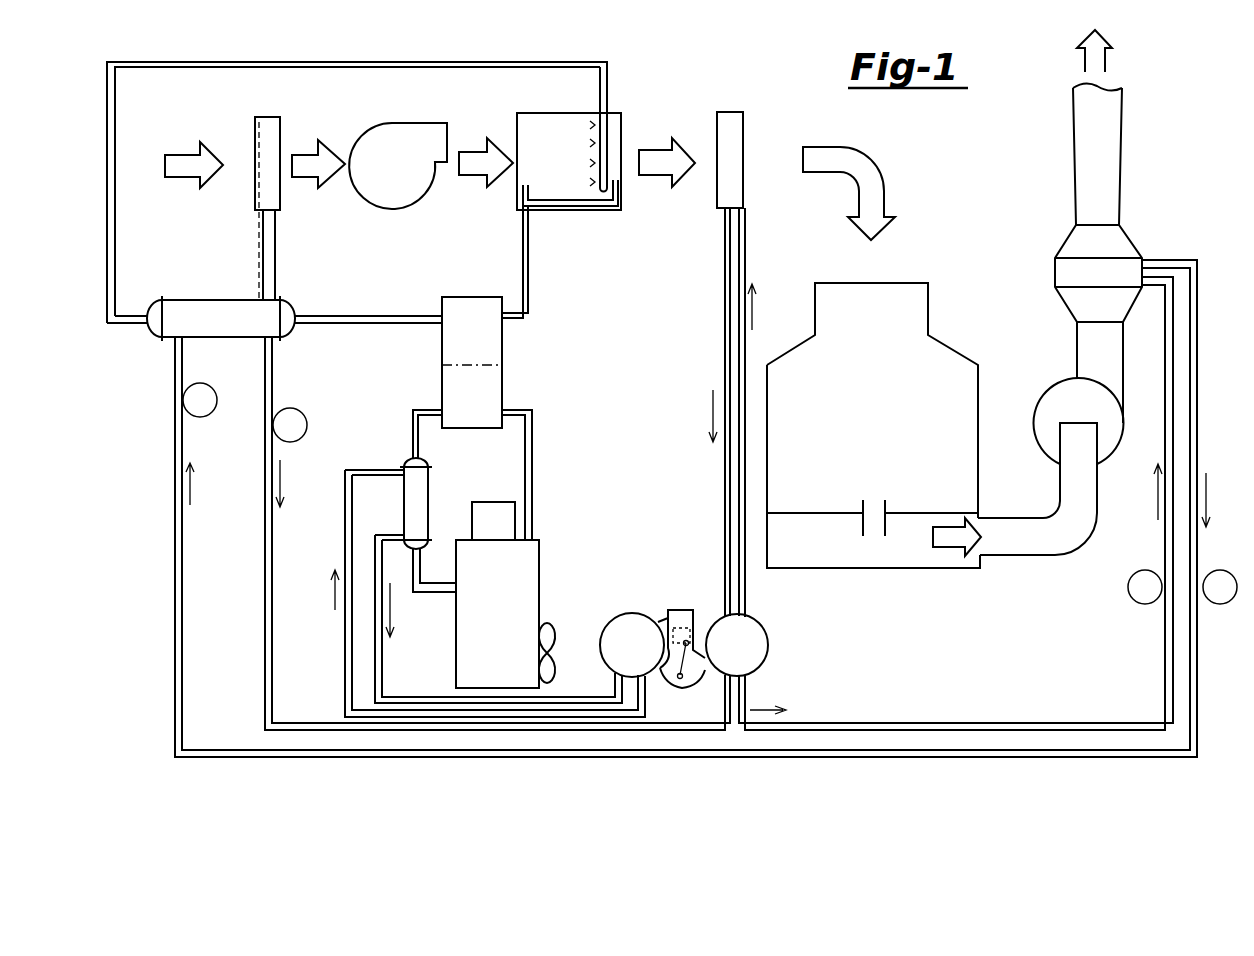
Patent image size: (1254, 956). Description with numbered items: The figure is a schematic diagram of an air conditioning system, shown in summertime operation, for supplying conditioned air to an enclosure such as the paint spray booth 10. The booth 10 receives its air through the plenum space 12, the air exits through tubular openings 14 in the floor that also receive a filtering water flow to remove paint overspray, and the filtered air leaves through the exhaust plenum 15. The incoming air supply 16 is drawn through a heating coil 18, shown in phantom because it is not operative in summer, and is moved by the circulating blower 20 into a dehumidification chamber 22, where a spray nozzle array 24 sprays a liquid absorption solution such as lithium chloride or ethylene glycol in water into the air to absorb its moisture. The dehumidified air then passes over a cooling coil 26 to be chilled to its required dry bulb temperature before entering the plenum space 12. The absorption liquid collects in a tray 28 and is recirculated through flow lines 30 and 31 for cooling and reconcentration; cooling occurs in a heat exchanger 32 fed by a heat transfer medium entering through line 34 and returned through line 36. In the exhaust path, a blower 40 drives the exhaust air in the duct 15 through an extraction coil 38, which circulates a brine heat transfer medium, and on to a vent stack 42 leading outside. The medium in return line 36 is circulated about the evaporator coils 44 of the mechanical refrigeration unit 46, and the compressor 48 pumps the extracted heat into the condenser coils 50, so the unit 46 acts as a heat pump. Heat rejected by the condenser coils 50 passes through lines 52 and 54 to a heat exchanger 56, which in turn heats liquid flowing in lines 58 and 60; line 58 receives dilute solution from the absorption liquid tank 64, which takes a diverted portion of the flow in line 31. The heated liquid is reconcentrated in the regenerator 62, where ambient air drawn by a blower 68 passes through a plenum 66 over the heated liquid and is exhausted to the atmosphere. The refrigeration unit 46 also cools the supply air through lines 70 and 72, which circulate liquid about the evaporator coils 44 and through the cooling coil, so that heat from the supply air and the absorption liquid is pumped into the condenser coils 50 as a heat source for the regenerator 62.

The paint spray booth 10 is at (952, 345).
The plenum space 12 is at (910, 292).
The tubular openings 14 is at (888, 505).
The exhaust plenum 15 is at (1015, 557).
The incoming air supply 16 is at (200, 120).
The heating coil 18 is at (267, 118).
The circulating blower 20 is at (420, 104).
The dehumidification chamber 22 is at (550, 95).
The spray nozzle array 24 is at (613, 122).
The cooling coil 26 is at (745, 125).
The tray 28 is at (572, 200).
The flow line 30 is at (447, 62).
The flow line 31 is at (530, 280).
The heat exchanger 32 is at (210, 300).
The entering line 34 is at (172, 390).
The return line 36 is at (275, 387).
The extraction coil 38 is at (1135, 258).
The blower 40 is at (1043, 408).
The vent stack 42 is at (1123, 153).
The evaporator coils 44 is at (768, 641).
The mechanical refrigeration unit 46 is at (677, 592).
The compressor 48 is at (690, 610).
The condenser coils 50 is at (648, 598).
The line 52 is at (375, 452).
The line 54 is at (376, 538).
The heat exchanger 56 is at (432, 476).
The line 58 is at (420, 410).
The line 60 is at (437, 595).
The regenerator 62 is at (543, 555).
The absorption liquid tank 64 is at (517, 370).
The plenum 66 is at (493, 502).
The blower 68 is at (566, 650).
The line 70 is at (723, 280).
The line 72 is at (746, 268).